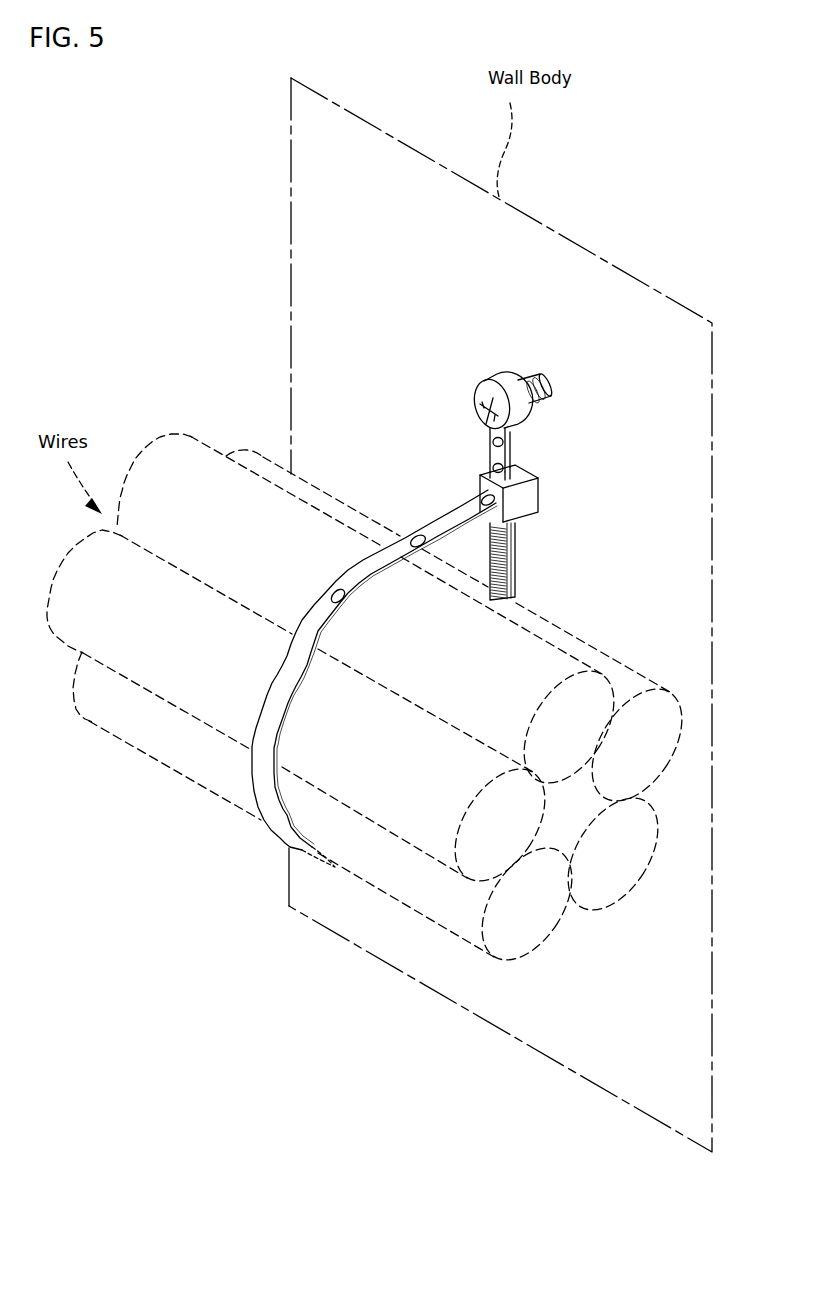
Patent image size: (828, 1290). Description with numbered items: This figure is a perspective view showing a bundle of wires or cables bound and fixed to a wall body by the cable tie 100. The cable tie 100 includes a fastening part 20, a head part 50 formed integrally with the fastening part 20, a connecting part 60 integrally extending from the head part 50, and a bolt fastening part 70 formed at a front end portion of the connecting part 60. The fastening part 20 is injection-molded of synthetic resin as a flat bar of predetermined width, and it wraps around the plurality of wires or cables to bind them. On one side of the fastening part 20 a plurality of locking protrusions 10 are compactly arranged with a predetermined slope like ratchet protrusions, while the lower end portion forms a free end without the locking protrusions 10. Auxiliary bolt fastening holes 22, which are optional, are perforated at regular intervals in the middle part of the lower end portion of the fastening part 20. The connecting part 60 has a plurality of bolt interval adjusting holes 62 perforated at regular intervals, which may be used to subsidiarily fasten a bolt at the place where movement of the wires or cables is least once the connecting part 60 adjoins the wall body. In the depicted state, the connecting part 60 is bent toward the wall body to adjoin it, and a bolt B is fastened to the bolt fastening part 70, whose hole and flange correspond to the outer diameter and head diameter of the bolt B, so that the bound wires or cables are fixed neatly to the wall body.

The locking protrusions 10 is at (515, 575).
The fastening part 20 is at (356, 678).
The auxiliary bolt fastening holes 22 is at (336, 590).
The head part 50 is at (532, 506).
The connecting part 60 is at (504, 447).
The bolt interval adjusting holes 62 is at (493, 467).
The bolt fastening part 70 is at (541, 370).
The bolt B is at (489, 392).
The cable tie 100 is at (432, 494).